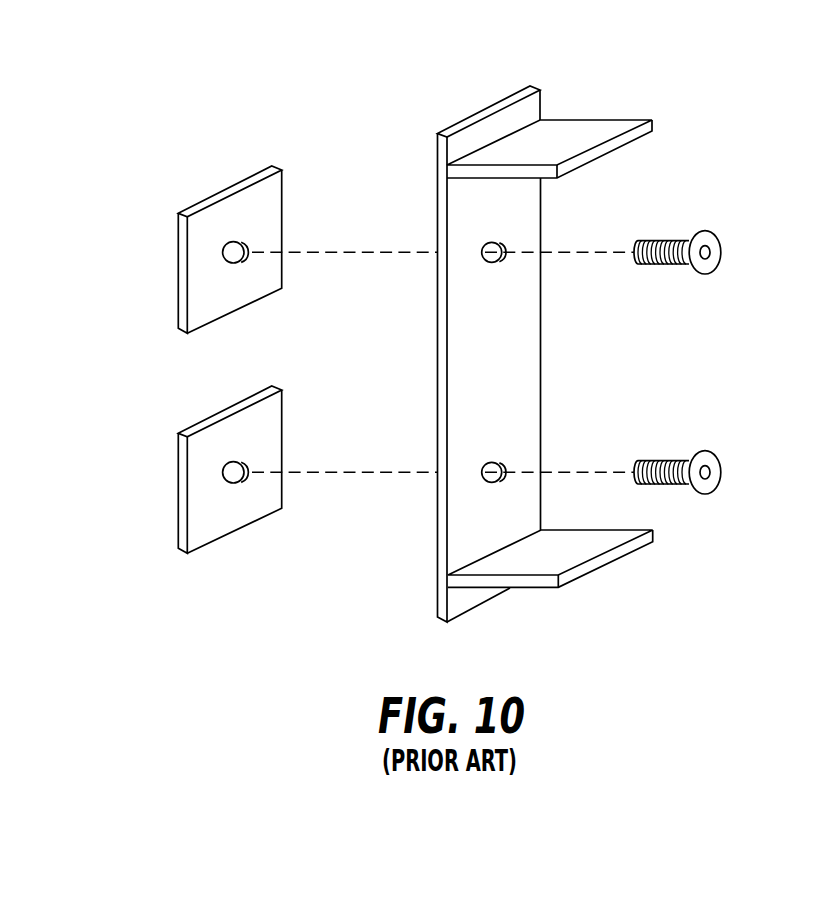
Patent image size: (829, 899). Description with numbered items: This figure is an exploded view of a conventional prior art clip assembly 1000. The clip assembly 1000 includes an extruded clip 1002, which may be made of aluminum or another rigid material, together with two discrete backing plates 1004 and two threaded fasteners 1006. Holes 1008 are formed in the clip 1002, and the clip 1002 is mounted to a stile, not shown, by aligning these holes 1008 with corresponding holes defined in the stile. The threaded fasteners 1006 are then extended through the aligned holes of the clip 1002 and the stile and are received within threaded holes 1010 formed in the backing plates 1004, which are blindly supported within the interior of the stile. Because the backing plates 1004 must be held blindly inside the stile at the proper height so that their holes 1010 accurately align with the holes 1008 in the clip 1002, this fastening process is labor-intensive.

The clip assembly 1000 is at (148, 65).
The extruded clip 1002 is at (503, 360).
The backing plates 1004 is at (179, 330).
The threaded fasteners 1006 is at (670, 265).
The holes 1008 is at (501, 261).
The threaded holes 1010 is at (247, 246).